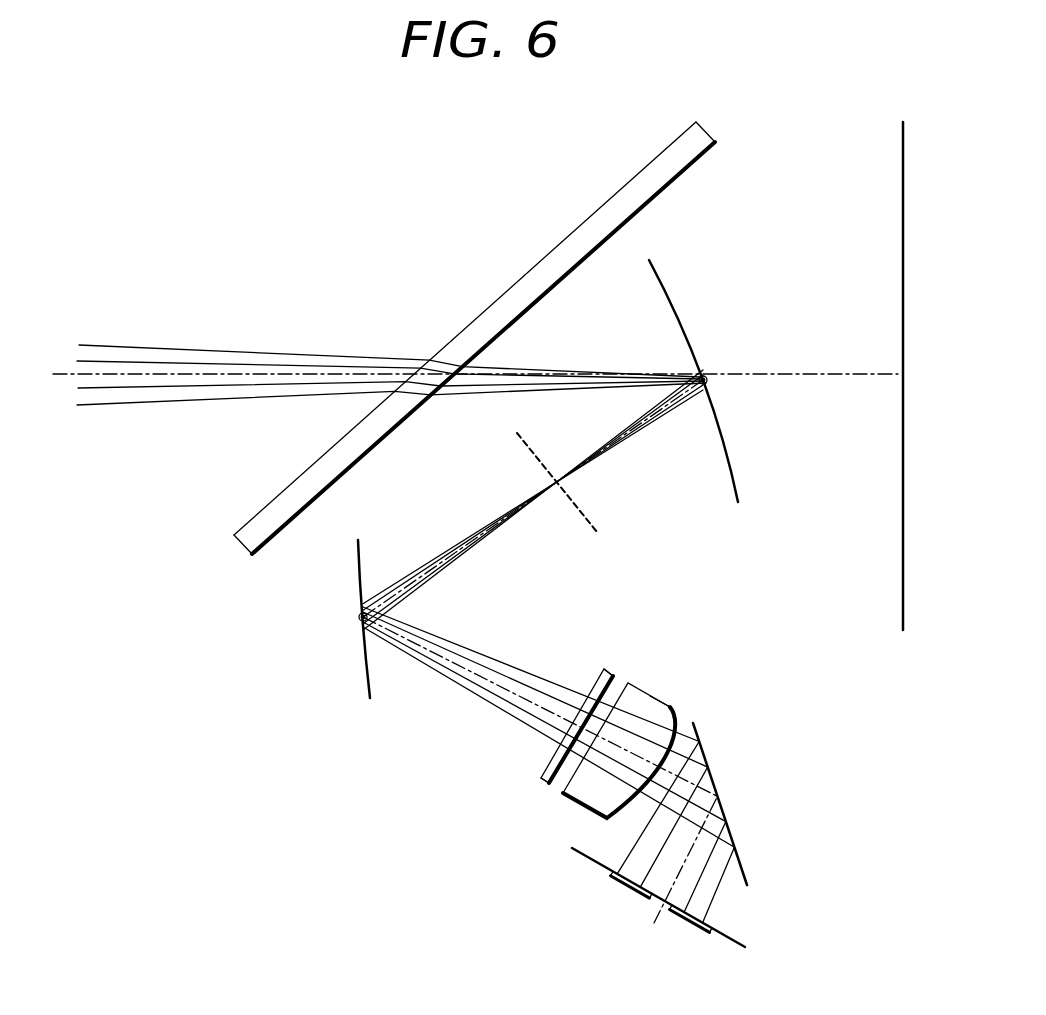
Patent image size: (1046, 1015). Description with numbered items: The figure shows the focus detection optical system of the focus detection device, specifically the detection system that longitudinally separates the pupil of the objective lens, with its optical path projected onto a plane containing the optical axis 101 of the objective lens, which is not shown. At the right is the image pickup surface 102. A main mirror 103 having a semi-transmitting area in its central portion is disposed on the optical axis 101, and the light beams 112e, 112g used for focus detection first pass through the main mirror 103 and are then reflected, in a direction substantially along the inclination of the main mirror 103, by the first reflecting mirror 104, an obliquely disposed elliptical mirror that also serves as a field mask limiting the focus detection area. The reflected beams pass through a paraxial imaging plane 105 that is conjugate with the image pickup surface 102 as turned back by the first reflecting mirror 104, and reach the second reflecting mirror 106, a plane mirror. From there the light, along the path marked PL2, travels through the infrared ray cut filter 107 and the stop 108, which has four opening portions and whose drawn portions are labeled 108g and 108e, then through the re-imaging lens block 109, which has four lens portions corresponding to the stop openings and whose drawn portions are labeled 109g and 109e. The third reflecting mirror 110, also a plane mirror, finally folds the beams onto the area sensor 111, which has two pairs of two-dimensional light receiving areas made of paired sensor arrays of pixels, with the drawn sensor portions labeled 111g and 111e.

The optical axis of an objective lens 101 is at (65, 370).
The image pickup surface 102 is at (900, 150).
The main mirror 103 is at (705, 131).
The first reflecting mirror 104 is at (672, 299).
The paraxial imaging plane 105 is at (588, 517).
The second reflecting mirror 106 is at (365, 667).
The infrared ray cut filter 107 is at (591, 674).
The stop 108 is at (617, 689).
The upper end of element 108 108g is at (565, 689).
The lower end of element 108 108e is at (556, 744).
The re-imaging lens block 109 is at (663, 686).
The upper end of lens 109 109g is at (671, 706).
The lower end of lens 109 109e is at (571, 794).
The third reflecting mirror 110 is at (716, 782).
The area sensor 111 is at (734, 936).
The sensor segment (green) 111g is at (627, 888).
The sensor segment 111e is at (691, 933).
The light beam 112e is at (168, 354).
The light beam 112g is at (152, 398).
The second optical path / light ray PL2 is at (463, 679).